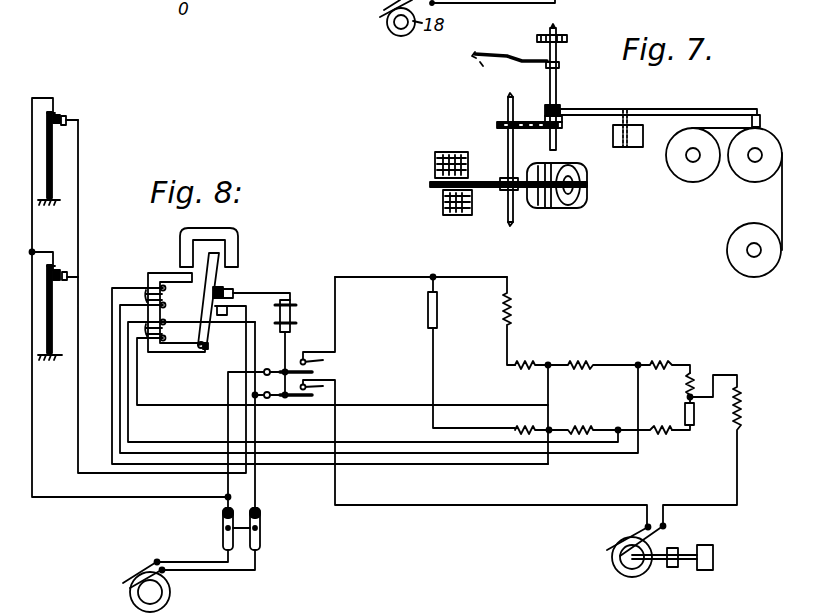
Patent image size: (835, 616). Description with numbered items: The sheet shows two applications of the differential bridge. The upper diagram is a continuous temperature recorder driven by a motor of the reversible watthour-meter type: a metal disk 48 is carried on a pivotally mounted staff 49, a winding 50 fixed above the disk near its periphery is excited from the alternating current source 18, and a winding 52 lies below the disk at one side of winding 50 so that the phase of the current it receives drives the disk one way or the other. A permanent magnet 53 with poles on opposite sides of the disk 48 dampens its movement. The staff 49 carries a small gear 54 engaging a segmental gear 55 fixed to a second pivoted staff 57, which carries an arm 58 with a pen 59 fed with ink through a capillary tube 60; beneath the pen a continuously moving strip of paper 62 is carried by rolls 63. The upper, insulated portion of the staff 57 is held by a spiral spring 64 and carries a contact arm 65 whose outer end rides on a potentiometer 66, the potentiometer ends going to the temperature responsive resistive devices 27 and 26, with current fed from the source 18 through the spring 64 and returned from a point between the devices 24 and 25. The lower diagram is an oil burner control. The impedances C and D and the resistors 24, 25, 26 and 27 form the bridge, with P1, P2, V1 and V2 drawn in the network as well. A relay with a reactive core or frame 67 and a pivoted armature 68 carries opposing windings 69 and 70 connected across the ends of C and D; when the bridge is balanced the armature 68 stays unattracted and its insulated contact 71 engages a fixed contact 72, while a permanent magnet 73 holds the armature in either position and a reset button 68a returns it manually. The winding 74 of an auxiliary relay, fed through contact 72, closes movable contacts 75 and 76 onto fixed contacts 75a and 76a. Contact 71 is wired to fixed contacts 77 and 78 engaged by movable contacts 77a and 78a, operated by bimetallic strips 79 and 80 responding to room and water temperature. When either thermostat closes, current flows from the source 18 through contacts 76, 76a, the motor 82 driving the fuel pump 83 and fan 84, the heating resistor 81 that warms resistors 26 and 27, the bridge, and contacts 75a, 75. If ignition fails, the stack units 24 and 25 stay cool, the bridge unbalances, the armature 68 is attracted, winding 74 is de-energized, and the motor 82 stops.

In FIG. 8, the alternating current source 18 is at (170, 590).
In FIG. 8, the temperature responsive resistive device 24 is at (513, 305).
In FIG. 8, the temperature responsive resistive device 25 is at (428, 308).
In FIG. 8, the temperature responsive resistive device 26 is at (687, 385).
In FIG. 8, the temperature responsive resistive device 27 is at (694, 413).
In FIG. 7, the metal disk 48 is at (487, 189).
In FIG. 7, the pivotally mounted staff 49 is at (508, 157).
In FIG. 7, the winding 50 is at (436, 162).
In FIG. 7, the winding 52 is at (444, 202).
In FIG. 7, the permanent magnet 53 is at (581, 173).
In FIG. 7, the small gear 54 is at (497, 124).
In FIG. 7, the segmental gear 55 is at (528, 120).
In FIG. 7, the pivoted staff 57 is at (556, 81).
In FIG. 7, the arm 58 is at (596, 111).
In FIG. 7, the pen 59 is at (762, 126).
In FIG. 7, the capillary tube 60 is at (613, 131).
In FIG. 7, the strip of paper 62 is at (722, 125).
In FIG. 7, the rolls 63 is at (744, 168).
In FIG. 7, the spiral spring 64 is at (559, 36).
In FIG. 7, the contact arm 65 is at (506, 54).
In FIG. 7, the potentiometer 66 is at (480, 64).
In FIG. 8, the reactive core or frame 67 is at (185, 352).
In FIG. 8, the pivoted armature 68 is at (220, 280).
In FIG. 8, the reset button 68a is at (238, 325).
In FIG. 8, the winding 69 is at (169, 294).
In FIG. 8, the winding 70 is at (169, 329).
In FIG. 8, the insulated contact 71 is at (223, 288).
In FIG. 8, the fixed contact 72 is at (233, 292).
In FIG. 8, the permanent magnet 73 is at (228, 233).
In FIG. 8, the winding 74 is at (293, 320).
In FIG. 8, the movable contact 75 is at (290, 370).
In FIG. 8, the fixed contact 75a is at (325, 362).
In FIG. 8, the movable contact 76 is at (302, 393).
In FIG. 8, the fixed contact 76a is at (325, 388).
In FIG. 8, the fixed contact 77 is at (67, 118).
In FIG. 8, the movable contact 77a is at (60, 113).
In FIG. 8, the fixed contact 78 is at (79, 277).
In FIG. 8, the movable contact 78a is at (68, 265).
In FIG. 8, the bimetallic strip 79 is at (62, 176).
In FIG. 8, the bimetallic strip 80 is at (57, 333).
In FIG. 8, the heating resistor 81 is at (740, 405).
In FIG. 8, the motor 82 is at (626, 573).
In FIG. 8, the fuel pump 83 is at (673, 568).
In FIG. 8, the fan 84 is at (704, 547).
In FIG. 8, the resistor P1 is at (531, 355).
In FIG. 8, the resistor P2 is at (532, 420).
In FIG. 8, the impedance device C is at (593, 354).
In FIG. 8, the impedance device D is at (583, 420).
In FIG. 8, the resistor V1 is at (664, 356).
In FIG. 8, the resistor V2 is at (645, 442).